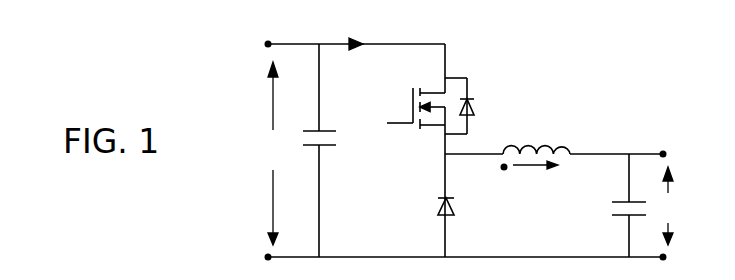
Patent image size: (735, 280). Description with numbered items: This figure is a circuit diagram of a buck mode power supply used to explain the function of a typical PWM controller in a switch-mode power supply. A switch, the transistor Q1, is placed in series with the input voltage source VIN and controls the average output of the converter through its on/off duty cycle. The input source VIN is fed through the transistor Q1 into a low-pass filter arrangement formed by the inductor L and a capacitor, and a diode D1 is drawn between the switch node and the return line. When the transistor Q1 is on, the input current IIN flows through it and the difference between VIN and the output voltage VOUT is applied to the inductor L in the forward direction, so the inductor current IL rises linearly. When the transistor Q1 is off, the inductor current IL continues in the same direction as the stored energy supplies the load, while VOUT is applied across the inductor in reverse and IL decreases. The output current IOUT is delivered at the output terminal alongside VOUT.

The transistor Q1 is at (423, 106).
The freewheeling diode D1 is at (428, 204).
The inductor L is at (536, 134).
The input voltage source VIN is at (275, 153).
The output voltage VOUT is at (686, 206).
The input current IIN is at (354, 30).
The output current IOUT is at (678, 136).
The inductor current IL is at (536, 177).